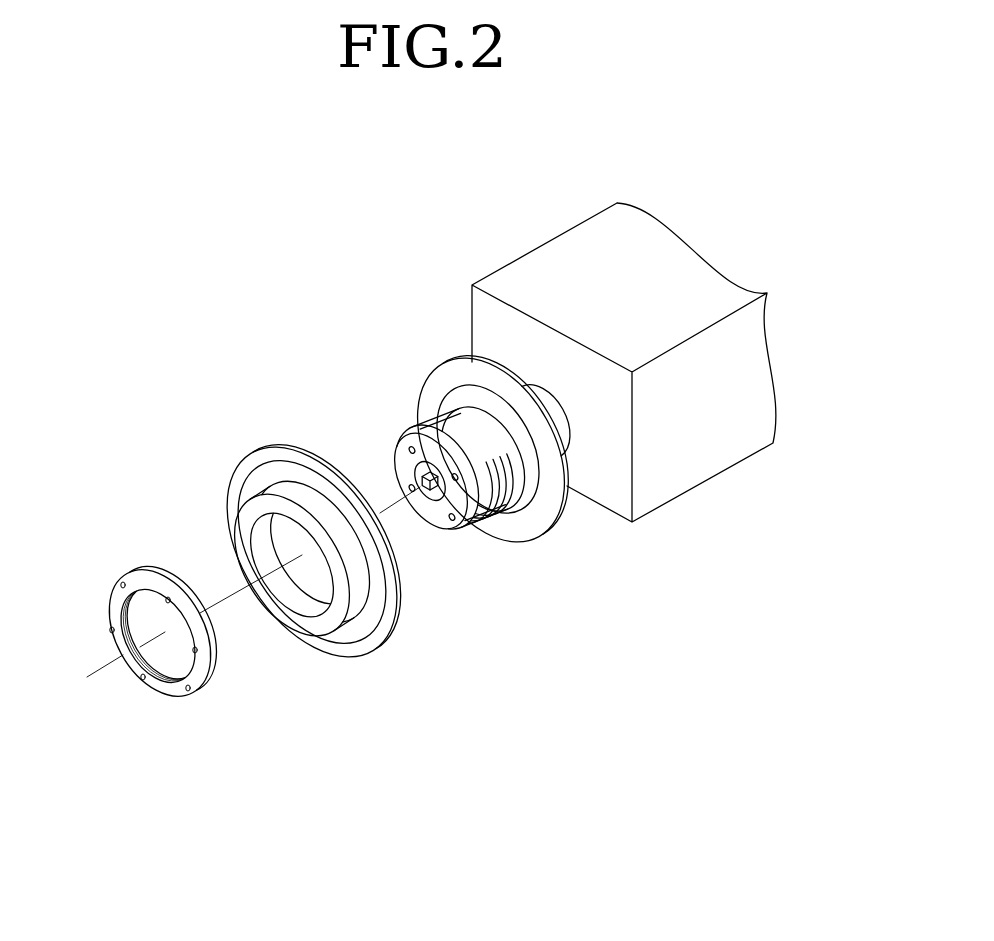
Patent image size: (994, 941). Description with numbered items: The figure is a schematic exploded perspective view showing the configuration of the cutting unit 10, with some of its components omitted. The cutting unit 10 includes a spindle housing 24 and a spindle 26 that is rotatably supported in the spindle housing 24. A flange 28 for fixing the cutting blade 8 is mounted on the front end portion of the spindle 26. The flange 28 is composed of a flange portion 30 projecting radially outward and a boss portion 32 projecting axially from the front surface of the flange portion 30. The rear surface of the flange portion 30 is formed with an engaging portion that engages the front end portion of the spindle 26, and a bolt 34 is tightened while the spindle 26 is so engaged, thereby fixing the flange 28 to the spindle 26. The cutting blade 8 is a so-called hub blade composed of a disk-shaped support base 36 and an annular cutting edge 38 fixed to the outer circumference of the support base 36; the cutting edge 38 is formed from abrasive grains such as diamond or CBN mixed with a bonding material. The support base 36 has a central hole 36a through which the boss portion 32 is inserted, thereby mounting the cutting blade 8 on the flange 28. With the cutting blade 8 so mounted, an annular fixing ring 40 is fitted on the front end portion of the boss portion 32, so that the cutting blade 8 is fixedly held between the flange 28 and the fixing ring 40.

The cutting blade 8 is at (280, 595).
The cutting unit 10 is at (300, 256).
The spindle housing 24 is at (685, 260).
The spindle 26 is at (543, 400).
The flange 28 is at (462, 490).
The flange portion 30 is at (532, 525).
The boss portion 32 is at (427, 505).
The bolt 34 is at (400, 458).
The support base 36 is at (251, 603).
The central hole 36a is at (257, 537).
The cutting edge 38 is at (350, 650).
The fixing ring 40 is at (175, 695).